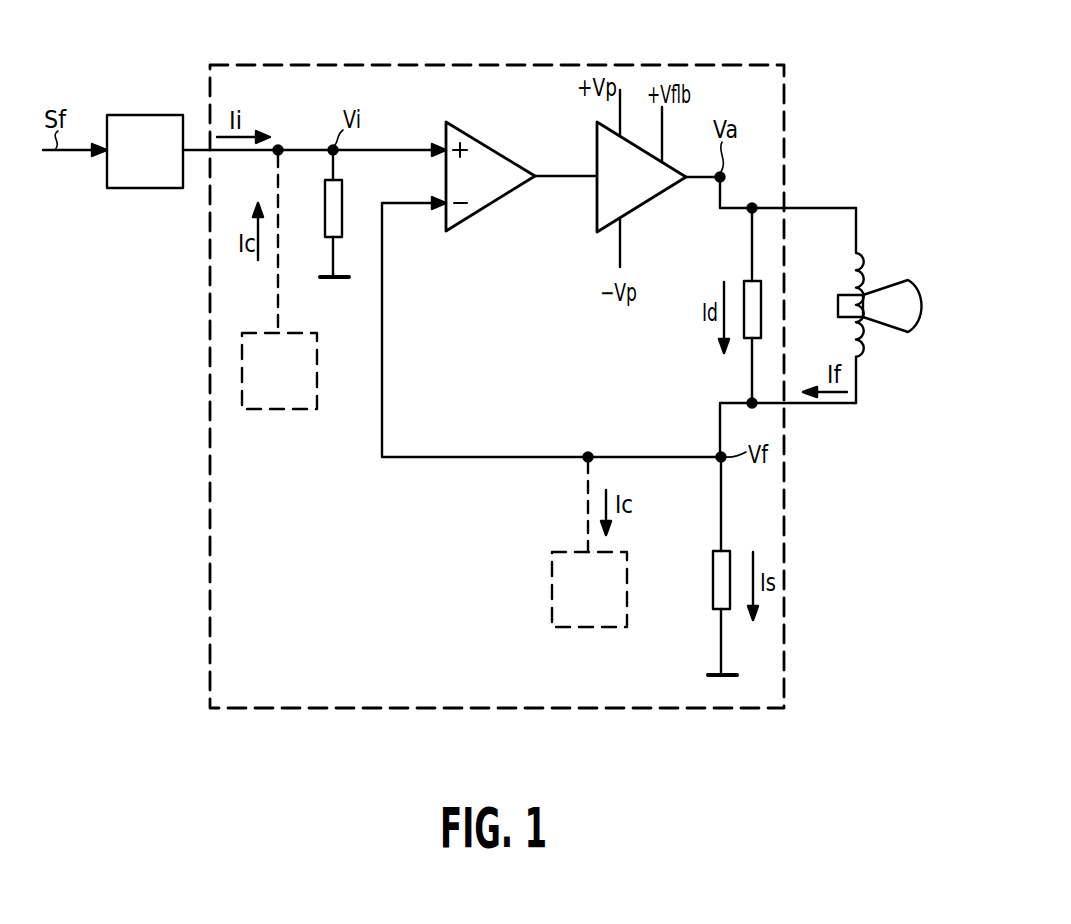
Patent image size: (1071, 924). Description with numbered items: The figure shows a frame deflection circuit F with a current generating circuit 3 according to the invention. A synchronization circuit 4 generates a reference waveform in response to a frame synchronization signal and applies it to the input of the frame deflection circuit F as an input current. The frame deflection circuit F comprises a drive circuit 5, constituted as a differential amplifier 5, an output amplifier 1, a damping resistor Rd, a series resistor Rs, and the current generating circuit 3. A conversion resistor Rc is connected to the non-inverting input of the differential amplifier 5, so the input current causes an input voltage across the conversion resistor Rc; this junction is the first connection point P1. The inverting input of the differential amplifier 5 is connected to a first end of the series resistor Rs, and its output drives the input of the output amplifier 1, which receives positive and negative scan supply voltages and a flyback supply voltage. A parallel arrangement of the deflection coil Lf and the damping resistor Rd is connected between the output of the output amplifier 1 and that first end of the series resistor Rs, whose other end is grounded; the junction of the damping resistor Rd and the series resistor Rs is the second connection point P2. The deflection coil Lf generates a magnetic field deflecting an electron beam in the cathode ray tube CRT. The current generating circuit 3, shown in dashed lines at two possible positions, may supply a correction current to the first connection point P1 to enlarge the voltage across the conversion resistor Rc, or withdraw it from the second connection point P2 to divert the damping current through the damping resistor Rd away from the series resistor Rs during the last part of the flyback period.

The output amplifier 1 is at (606, 140).
The current generating circuit 3 is at (281, 400).
The synchronization circuit 4 is at (126, 122).
The drive circuit 5 is at (488, 157).
The frame deflection circuit F is at (748, 65).
The first connection point P1 is at (279, 146).
The second connection point P2 is at (587, 452).
The conversion resistor Rc is at (340, 192).
The damping resistor Rd is at (747, 287).
The series resistor Rs is at (717, 568).
The deflection coil Lf is at (858, 258).
The cathode ray tube CRT is at (903, 322).